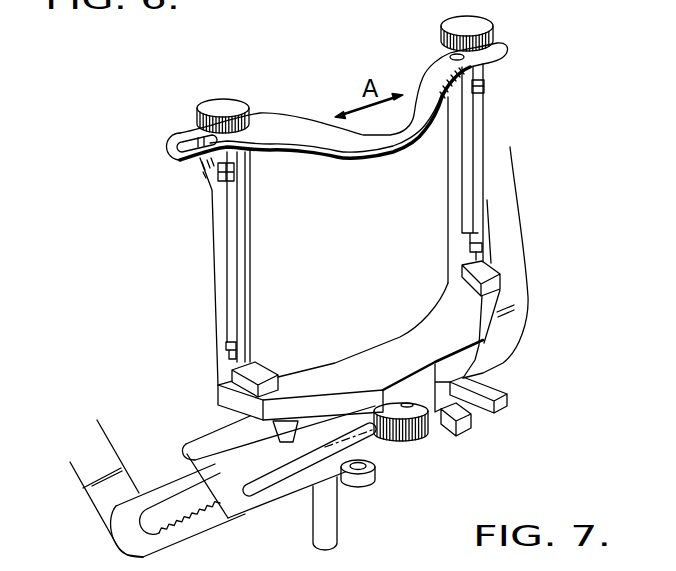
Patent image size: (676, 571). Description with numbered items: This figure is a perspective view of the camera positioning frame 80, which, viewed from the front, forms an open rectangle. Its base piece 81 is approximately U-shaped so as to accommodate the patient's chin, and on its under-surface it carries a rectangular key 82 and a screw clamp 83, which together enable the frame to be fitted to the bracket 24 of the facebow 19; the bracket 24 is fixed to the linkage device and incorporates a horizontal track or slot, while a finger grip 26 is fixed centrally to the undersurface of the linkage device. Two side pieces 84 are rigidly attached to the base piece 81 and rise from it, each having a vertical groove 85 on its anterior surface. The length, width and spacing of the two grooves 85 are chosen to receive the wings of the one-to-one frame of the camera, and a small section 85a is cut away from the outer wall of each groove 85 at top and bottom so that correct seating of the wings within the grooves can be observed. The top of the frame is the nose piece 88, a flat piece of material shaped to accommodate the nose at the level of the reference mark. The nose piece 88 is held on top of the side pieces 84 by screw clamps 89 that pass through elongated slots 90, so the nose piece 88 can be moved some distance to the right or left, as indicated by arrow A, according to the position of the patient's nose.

The facebow 19 is at (127, 442).
The bracket 24 is at (493, 391).
The finger grip 26 is at (335, 521).
The camera positioning frame 80 is at (494, 119).
The base piece 81 is at (393, 362).
The rectangular key 82 is at (439, 412).
The screw clamp 83 is at (407, 438).
The side pieces 84 is at (217, 263).
The vertical groove 85 is at (242, 293).
The small cut-away section 85a is at (218, 166).
The nose piece 88 is at (302, 127).
The screw clamps 89 is at (227, 110).
The elongated slots 90 is at (186, 142).